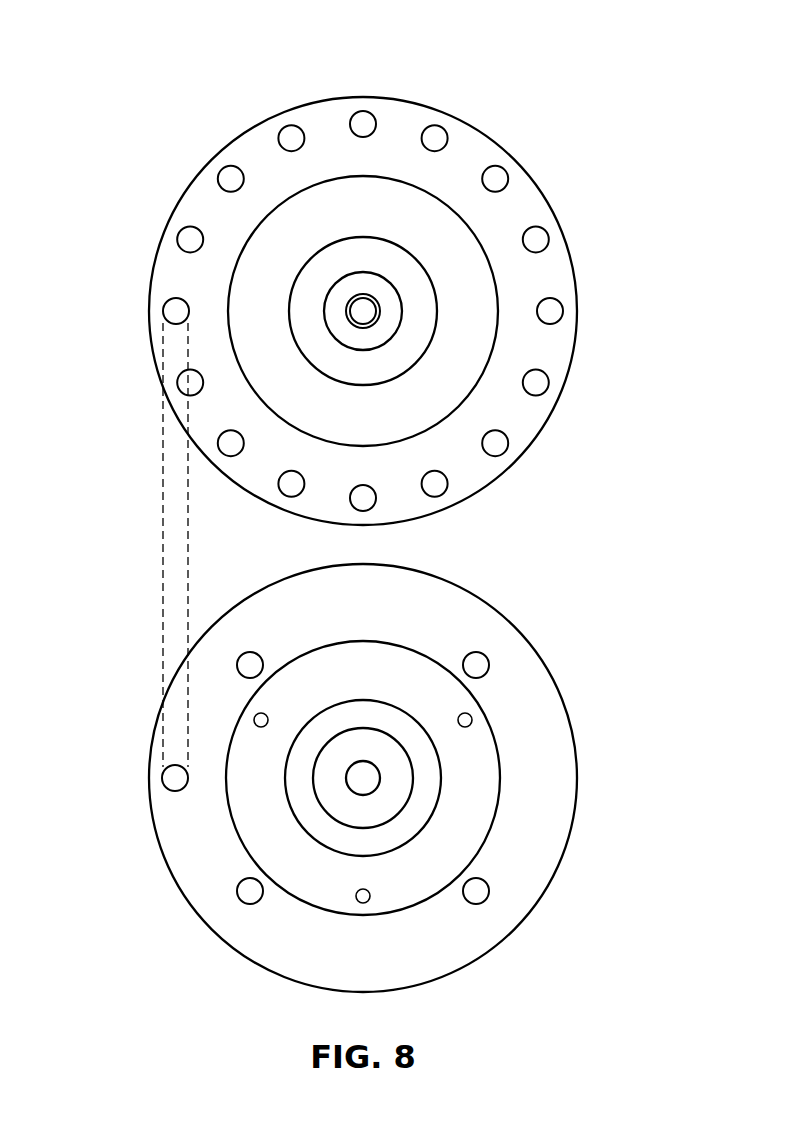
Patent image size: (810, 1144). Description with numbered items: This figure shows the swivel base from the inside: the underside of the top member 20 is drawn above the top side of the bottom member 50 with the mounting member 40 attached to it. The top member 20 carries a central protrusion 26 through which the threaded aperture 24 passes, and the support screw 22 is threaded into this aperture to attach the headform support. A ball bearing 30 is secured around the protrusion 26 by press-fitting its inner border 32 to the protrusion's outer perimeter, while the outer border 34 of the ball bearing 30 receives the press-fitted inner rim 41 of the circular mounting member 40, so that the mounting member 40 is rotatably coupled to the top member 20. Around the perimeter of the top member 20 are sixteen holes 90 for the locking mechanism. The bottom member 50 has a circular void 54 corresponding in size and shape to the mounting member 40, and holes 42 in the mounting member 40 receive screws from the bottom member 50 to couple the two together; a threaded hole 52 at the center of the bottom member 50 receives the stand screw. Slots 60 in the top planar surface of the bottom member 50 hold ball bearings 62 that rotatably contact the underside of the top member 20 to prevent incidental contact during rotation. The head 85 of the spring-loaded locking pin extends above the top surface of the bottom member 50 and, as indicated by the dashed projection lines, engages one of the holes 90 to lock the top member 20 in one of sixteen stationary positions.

The top member 20 is at (148, 133).
The support screw 22 is at (367, 311).
The threaded aperture 24 is at (378, 322).
The protrusion 26 is at (385, 292).
The ball bearing 30 is at (373, 272).
The inner border 32 is at (418, 247).
The outer border 34 is at (363, 236).
The holes 90 is at (173, 312).
The bottom member 50 is at (582, 645).
The mounting member 40 is at (477, 782).
The inner rim 41 is at (442, 767).
The holes 42 is at (363, 898).
The threaded hole 52 is at (380, 775).
The circular void 54 is at (383, 802).
The slots 60 is at (477, 897).
The ball bearings 62 is at (250, 663).
The head 85 is at (175, 778).